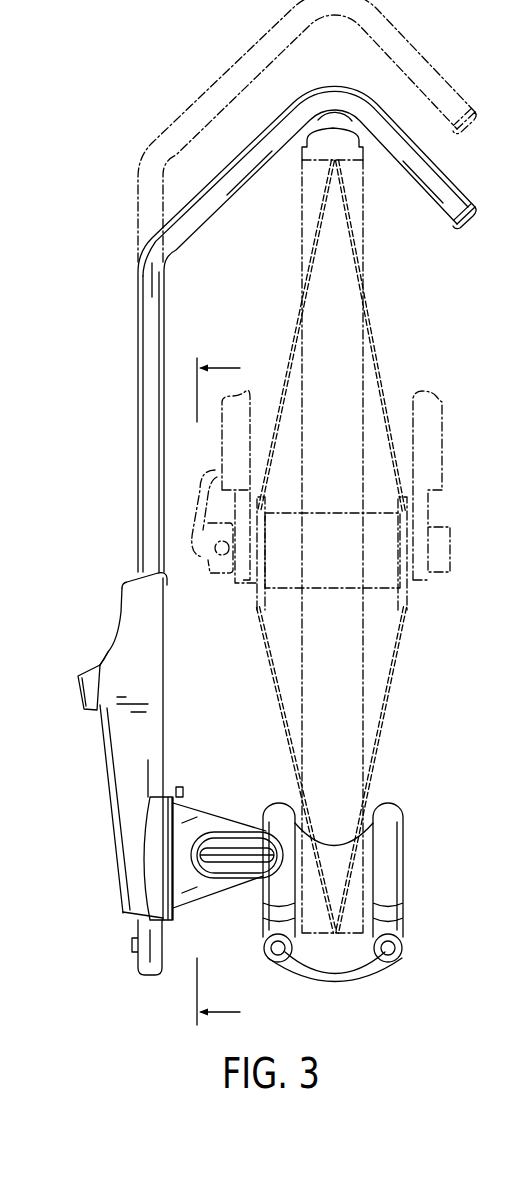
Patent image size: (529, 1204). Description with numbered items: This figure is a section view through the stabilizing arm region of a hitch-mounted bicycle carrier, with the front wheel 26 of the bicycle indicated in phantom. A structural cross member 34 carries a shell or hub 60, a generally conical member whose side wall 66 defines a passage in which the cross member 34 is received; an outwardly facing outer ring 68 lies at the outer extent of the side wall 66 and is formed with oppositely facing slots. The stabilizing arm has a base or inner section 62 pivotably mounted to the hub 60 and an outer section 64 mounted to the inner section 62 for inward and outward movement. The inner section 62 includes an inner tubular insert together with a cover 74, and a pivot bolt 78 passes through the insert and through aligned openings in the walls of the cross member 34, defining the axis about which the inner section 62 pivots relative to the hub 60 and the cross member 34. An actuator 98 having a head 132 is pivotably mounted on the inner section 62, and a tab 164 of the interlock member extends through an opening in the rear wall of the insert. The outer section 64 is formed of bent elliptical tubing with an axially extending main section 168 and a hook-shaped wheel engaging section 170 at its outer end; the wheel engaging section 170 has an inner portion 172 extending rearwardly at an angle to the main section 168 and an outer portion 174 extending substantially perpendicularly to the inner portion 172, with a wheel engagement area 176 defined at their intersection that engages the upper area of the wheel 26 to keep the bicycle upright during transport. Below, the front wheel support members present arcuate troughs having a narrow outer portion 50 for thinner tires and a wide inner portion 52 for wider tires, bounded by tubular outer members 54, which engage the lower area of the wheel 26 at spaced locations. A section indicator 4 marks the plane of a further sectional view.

The section line 4- 4 is at (226, 691).
The front wheel 26 is at (373, 303).
The structural cross member 34 is at (210, 878).
The narrow outer portion 50 is at (320, 973).
The wide inner portion 52 is at (363, 960).
The tubular outer members 54 is at (263, 948).
The hub 60 is at (228, 848).
The inner section 62 is at (126, 790).
The outer section 64 is at (273, 286).
The side wall 66 is at (193, 907).
The outer ring 68 is at (222, 843).
The cover 74 is at (95, 733).
The pivot bolt 78 is at (228, 848).
The actuator 98 is at (74, 695).
The head 132 is at (97, 663).
The tab 164 is at (168, 788).
The main section 168 is at (133, 393).
The wheel engaging section 170 is at (223, 70).
The inner portion 172 is at (240, 196).
The outer portion 174 is at (413, 175).
The wheel engagement area 176 is at (334, 115).